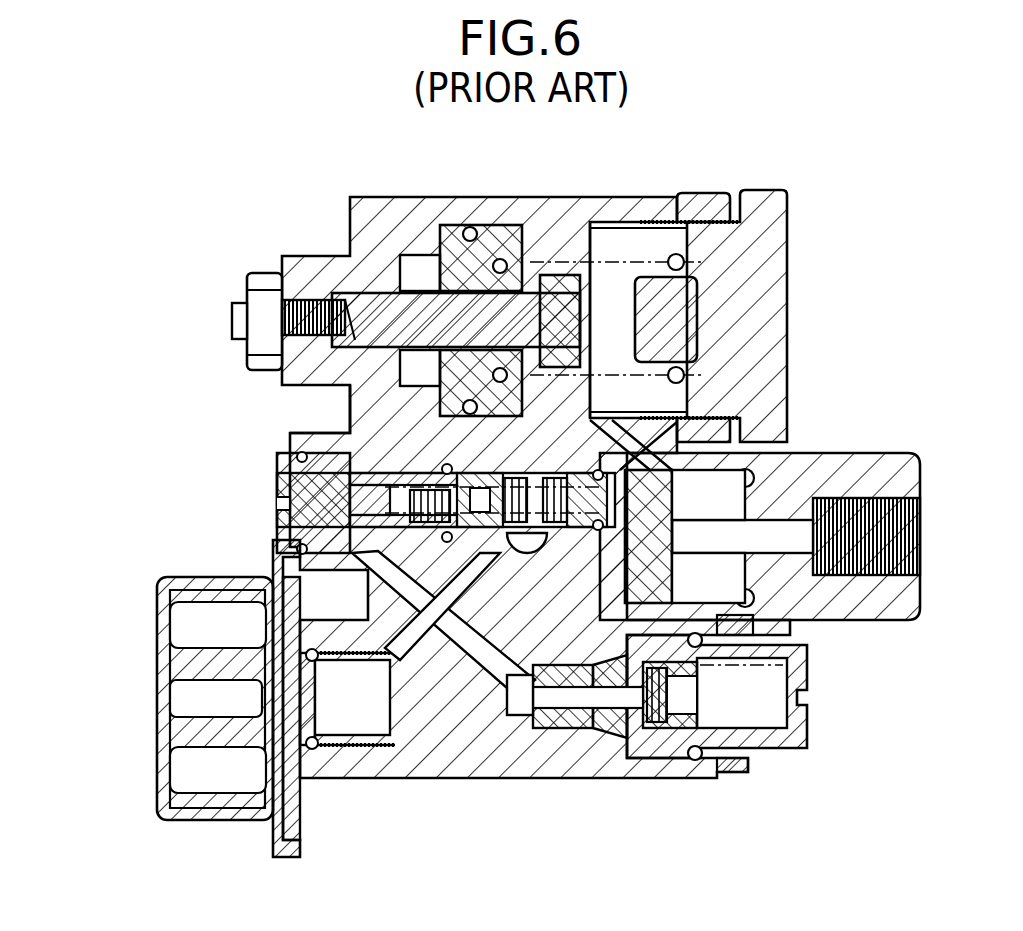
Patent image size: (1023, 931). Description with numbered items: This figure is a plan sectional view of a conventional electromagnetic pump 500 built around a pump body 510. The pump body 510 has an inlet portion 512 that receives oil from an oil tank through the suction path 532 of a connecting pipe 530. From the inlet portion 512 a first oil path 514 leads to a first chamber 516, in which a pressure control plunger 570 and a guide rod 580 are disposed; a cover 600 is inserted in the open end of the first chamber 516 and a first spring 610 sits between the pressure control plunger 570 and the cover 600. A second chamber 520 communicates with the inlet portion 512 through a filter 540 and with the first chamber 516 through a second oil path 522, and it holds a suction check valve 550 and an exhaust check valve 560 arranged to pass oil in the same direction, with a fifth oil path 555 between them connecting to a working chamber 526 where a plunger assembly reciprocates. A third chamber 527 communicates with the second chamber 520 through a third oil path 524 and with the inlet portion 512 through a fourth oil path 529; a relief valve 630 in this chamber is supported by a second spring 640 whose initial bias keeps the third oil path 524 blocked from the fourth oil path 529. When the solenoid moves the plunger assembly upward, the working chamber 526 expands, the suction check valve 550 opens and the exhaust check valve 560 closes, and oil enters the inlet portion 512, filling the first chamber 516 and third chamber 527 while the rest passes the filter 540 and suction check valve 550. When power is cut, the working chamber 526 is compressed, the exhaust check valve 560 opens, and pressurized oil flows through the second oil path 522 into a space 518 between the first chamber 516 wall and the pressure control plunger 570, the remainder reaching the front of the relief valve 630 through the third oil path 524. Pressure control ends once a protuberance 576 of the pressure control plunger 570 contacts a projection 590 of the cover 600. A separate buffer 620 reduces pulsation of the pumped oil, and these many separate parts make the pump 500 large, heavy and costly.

The electromagnetic pump 500 is at (825, 185).
The pump body 510 is at (500, 758).
The inlet portion 512 is at (795, 550).
The first oil path 514 is at (640, 442).
The first chamber 516 is at (572, 245).
The space 518 is at (498, 258).
The second chamber 520 is at (487, 545).
The second oil path 522 is at (348, 418).
The third oil path 524 is at (455, 632).
The working chamber 526 is at (530, 556).
The third chamber 527 is at (600, 738).
The fourth oil path 529 is at (748, 632).
The connecting pipe 530 is at (905, 610).
The suction path 532 is at (645, 520).
The filter 540 is at (700, 487).
The suction check valve 550 is at (300, 470).
The fifth oil path 555 is at (372, 700).
The exhaust check valve 560 is at (412, 510).
The pressure control plunger 570 is at (485, 262).
The protuberance 576 is at (702, 200).
The guide rod 580 is at (398, 318).
The projection 590 is at (686, 285).
The cover 600 is at (778, 290).
The first spring 610 is at (626, 265).
The buffer 620 is at (165, 775).
The relief valve 630 is at (608, 712).
The second spring 640 is at (800, 690).